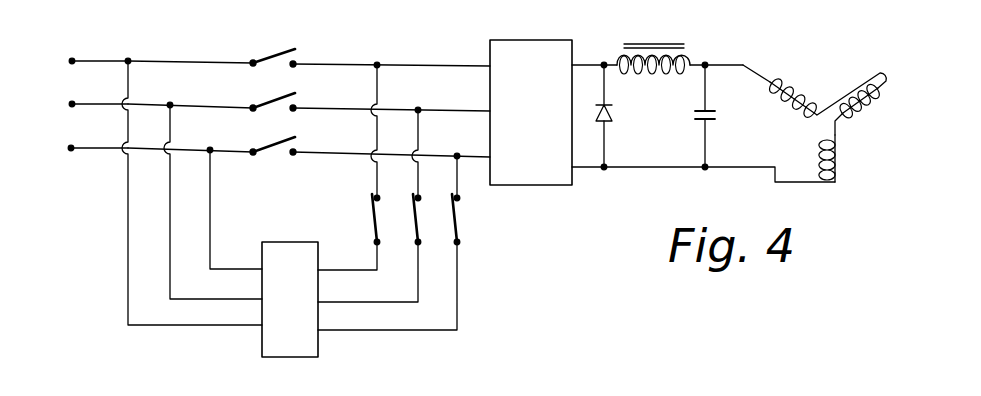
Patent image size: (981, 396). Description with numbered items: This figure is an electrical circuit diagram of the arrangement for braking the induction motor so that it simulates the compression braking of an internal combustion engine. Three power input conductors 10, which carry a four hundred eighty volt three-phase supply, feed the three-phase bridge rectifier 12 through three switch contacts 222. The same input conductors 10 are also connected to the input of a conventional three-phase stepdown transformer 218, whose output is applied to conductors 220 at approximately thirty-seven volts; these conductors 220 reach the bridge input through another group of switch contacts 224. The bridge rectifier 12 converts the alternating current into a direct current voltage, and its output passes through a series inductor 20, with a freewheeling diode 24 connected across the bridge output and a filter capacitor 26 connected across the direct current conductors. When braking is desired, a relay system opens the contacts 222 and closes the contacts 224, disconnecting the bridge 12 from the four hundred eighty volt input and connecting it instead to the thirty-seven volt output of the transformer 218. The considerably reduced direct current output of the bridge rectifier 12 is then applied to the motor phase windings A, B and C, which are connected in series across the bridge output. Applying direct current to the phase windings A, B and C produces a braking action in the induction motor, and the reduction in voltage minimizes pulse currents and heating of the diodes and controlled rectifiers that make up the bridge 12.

The power input conductors 10 is at (82, 148).
The switch contacts 222 is at (272, 57).
The three-phase bridge rectifier 12 is at (522, 40).
The inductor 20 is at (669, 72).
The freewheeling diode 24 is at (610, 115).
The filter capacitor 26 is at (713, 118).
The three-phase stepdown transformer 218 is at (274, 242).
The conductors 220 is at (457, 264).
The switch contacts 224 is at (459, 230).
The phase winding A is at (796, 96).
The phase winding B is at (857, 104).
The phase winding C is at (843, 157).